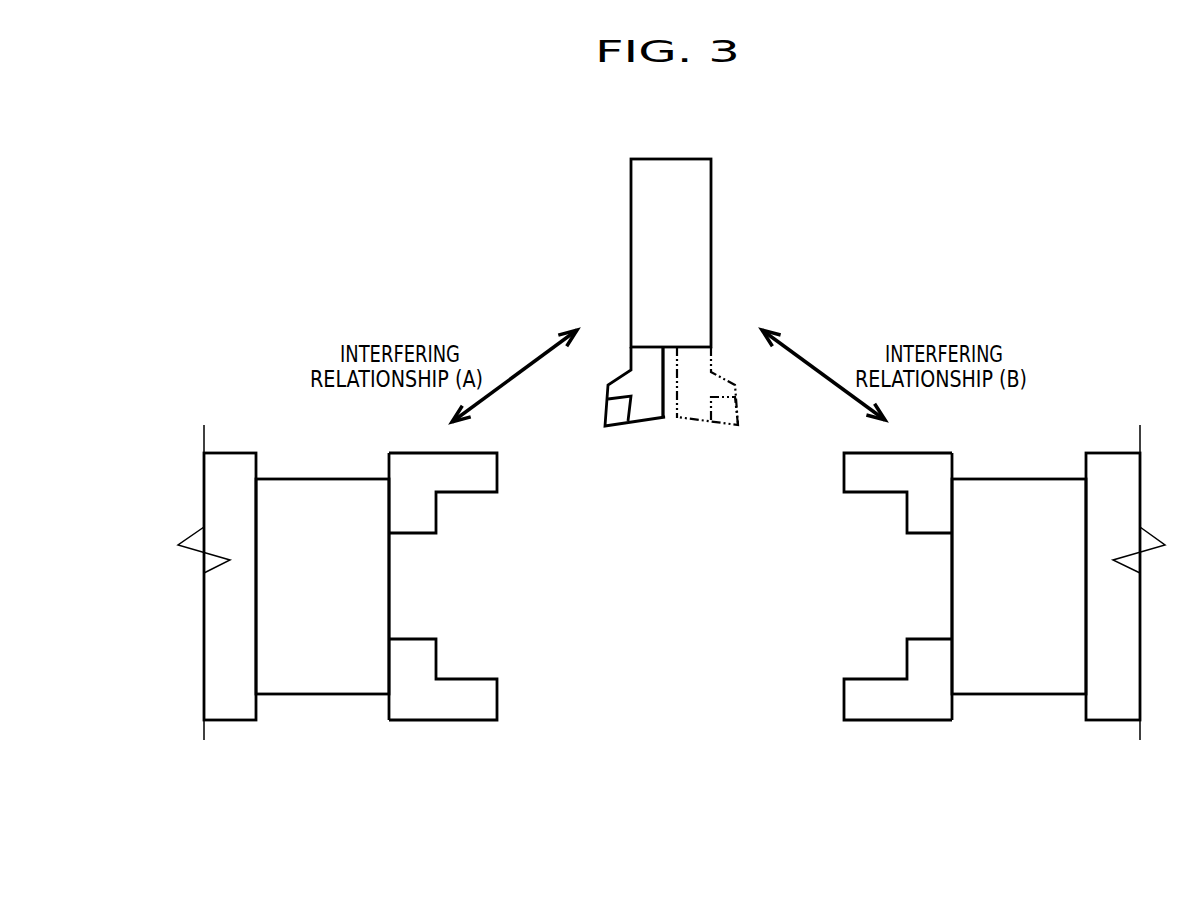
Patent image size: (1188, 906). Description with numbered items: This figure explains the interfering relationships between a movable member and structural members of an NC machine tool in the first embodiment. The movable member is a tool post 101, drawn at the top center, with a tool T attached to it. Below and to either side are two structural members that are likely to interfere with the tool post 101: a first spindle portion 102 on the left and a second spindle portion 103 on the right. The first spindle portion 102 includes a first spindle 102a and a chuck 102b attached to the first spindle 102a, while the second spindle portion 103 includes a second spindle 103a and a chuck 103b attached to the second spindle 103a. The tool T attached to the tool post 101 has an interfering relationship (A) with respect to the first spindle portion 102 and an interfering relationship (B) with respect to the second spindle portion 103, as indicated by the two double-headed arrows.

The tool post 101 is at (637, 247).
The tool T is at (690, 418).
The first spindle portion 102 is at (337, 639).
The first spindle 102a is at (236, 720).
The chuck 102b is at (350, 694).
The second spindle portion 103 is at (1004, 644).
The second spindle 103a is at (1097, 722).
The chuck 103b is at (981, 694).